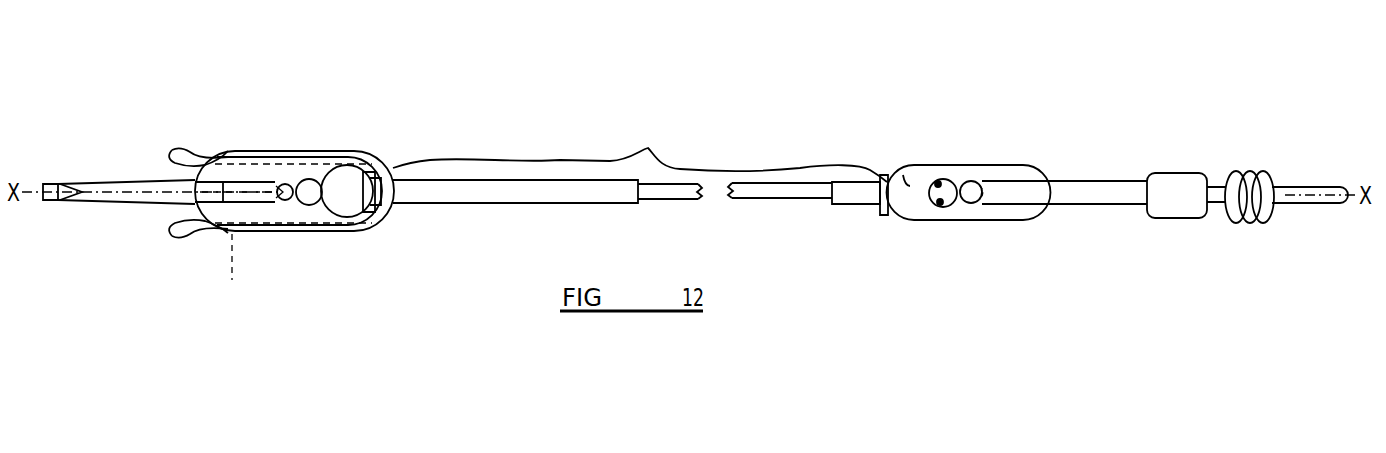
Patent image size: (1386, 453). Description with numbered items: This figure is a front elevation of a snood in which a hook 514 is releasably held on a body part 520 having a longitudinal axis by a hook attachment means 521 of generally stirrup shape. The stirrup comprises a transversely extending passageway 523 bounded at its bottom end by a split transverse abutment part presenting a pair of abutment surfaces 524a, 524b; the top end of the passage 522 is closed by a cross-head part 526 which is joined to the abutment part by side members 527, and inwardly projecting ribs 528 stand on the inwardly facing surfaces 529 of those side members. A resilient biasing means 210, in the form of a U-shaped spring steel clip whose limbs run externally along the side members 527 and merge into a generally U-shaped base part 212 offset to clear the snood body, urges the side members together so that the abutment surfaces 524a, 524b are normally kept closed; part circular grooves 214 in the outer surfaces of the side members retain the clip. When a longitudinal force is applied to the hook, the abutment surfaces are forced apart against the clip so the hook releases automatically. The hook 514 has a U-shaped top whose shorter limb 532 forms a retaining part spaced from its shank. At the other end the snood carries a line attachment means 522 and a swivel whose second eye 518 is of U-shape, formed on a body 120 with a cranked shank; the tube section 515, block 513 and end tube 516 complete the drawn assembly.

The hook 514 is at (137, 178).
The resilient biasing means 210 is at (233, 160).
The part circular grooves 214 is at (218, 144).
The abutment surface 524a is at (268, 173).
The abutment surface 524b is at (265, 222).
The shorter limb 532 is at (233, 203).
The transversely extending passageway 523 is at (306, 178).
The inwardly facing surfaces 529 is at (333, 166).
The inwardly projecting ribs 528 is at (292, 183).
The side members 527 is at (290, 215).
The hook attachment means 521 is at (343, 166).
The cross-head part 526 is at (393, 153).
The U-shaped base part 212 is at (392, 212).
The tube section 515 is at (595, 204).
The body part 520 is at (756, 161).
The line attachment means 522 is at (897, 220).
The second eye 518 is at (1053, 181).
The body 120 is at (1080, 218).
The block 513 is at (1173, 187).
The end tube 516 is at (1307, 204).